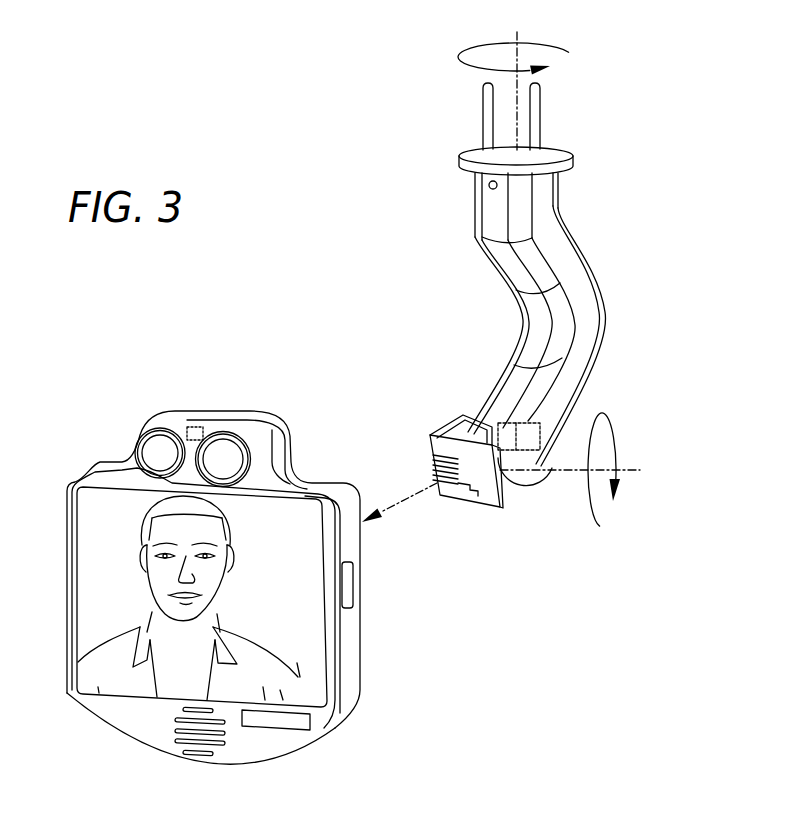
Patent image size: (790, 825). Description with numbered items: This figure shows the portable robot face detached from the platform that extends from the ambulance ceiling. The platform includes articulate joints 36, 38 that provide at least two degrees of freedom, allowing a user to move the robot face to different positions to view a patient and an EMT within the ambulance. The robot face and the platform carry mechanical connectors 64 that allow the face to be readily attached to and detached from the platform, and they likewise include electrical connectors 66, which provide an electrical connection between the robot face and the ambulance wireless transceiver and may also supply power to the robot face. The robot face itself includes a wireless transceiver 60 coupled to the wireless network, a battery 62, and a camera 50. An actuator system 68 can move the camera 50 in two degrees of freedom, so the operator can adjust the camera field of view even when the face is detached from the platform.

The articulate joint 36 is at (510, 450).
The articulate joint 38 is at (497, 188).
The camera 50 is at (158, 447).
The wireless transceiver 60 is at (353, 580).
The battery 62 is at (283, 728).
The mechanical connectors 64 is at (495, 497).
The electrical connectors 66 is at (438, 483).
The actuator system 68 is at (189, 427).